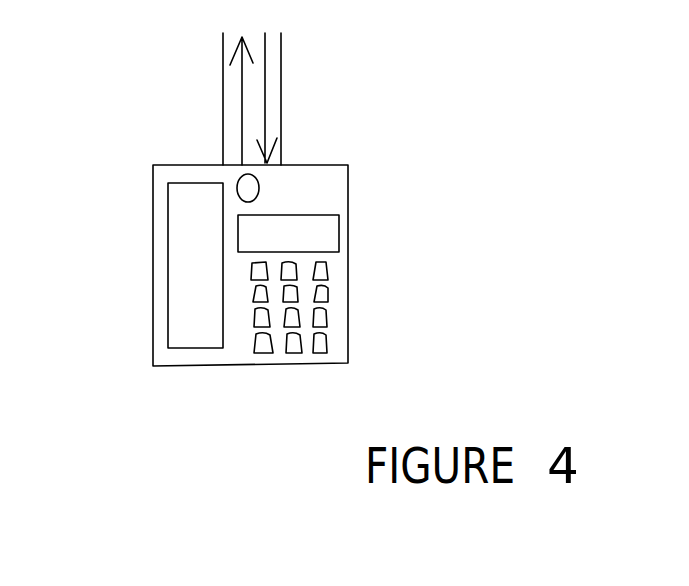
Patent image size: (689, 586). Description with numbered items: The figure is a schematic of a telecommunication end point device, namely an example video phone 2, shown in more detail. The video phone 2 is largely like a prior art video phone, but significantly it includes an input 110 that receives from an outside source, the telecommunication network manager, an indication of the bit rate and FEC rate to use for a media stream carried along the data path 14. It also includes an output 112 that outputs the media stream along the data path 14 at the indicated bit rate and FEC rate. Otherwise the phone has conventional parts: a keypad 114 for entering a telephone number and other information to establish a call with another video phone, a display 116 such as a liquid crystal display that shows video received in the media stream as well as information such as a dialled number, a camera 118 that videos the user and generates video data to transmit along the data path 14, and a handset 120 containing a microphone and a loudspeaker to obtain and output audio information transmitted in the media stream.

The video phone 2 is at (477, 140).
The data path 14 is at (282, 52).
The input 110 is at (268, 88).
The output 112 is at (242, 99).
The keypad 114 is at (323, 292).
The display 116 is at (328, 237).
The camera 118 is at (252, 186).
The handset 120 is at (187, 297).